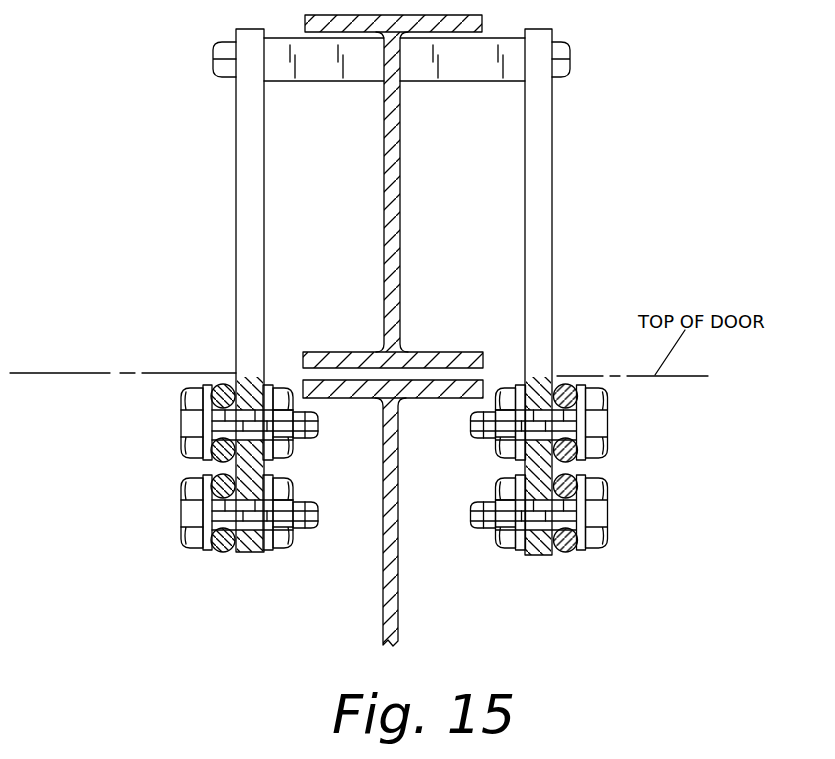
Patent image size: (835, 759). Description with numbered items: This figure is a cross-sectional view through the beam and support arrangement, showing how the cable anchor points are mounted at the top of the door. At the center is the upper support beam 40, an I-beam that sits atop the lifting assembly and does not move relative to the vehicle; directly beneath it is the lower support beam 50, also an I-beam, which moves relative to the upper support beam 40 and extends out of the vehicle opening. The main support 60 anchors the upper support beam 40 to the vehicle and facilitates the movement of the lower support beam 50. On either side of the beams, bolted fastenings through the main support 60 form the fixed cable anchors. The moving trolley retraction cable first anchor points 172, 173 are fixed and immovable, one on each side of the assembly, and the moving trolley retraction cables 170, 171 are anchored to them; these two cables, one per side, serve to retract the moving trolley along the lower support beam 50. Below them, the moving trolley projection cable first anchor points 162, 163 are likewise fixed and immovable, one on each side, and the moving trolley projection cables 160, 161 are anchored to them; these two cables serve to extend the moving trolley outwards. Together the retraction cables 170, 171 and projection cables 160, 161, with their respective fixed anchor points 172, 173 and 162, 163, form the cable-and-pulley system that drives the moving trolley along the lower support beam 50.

The upper support beam 40 is at (398, 210).
The lower support beam 50 is at (398, 615).
The main support 60 is at (553, 232).
The moving trolley retraction cable 170 is at (570, 385).
The moving trolley retraction cable 171 is at (222, 385).
The moving trolley retraction cable first anchor point 172 is at (608, 433).
The moving trolley retraction cable first anchor point 173 is at (178, 422).
The moving trolley projection cable 160 is at (562, 545).
The moving trolley projection cable 161 is at (222, 548).
The moving trolley projection cable first anchor point 162 is at (608, 518).
The moving trolley projection cable first anchor point 163 is at (178, 515).